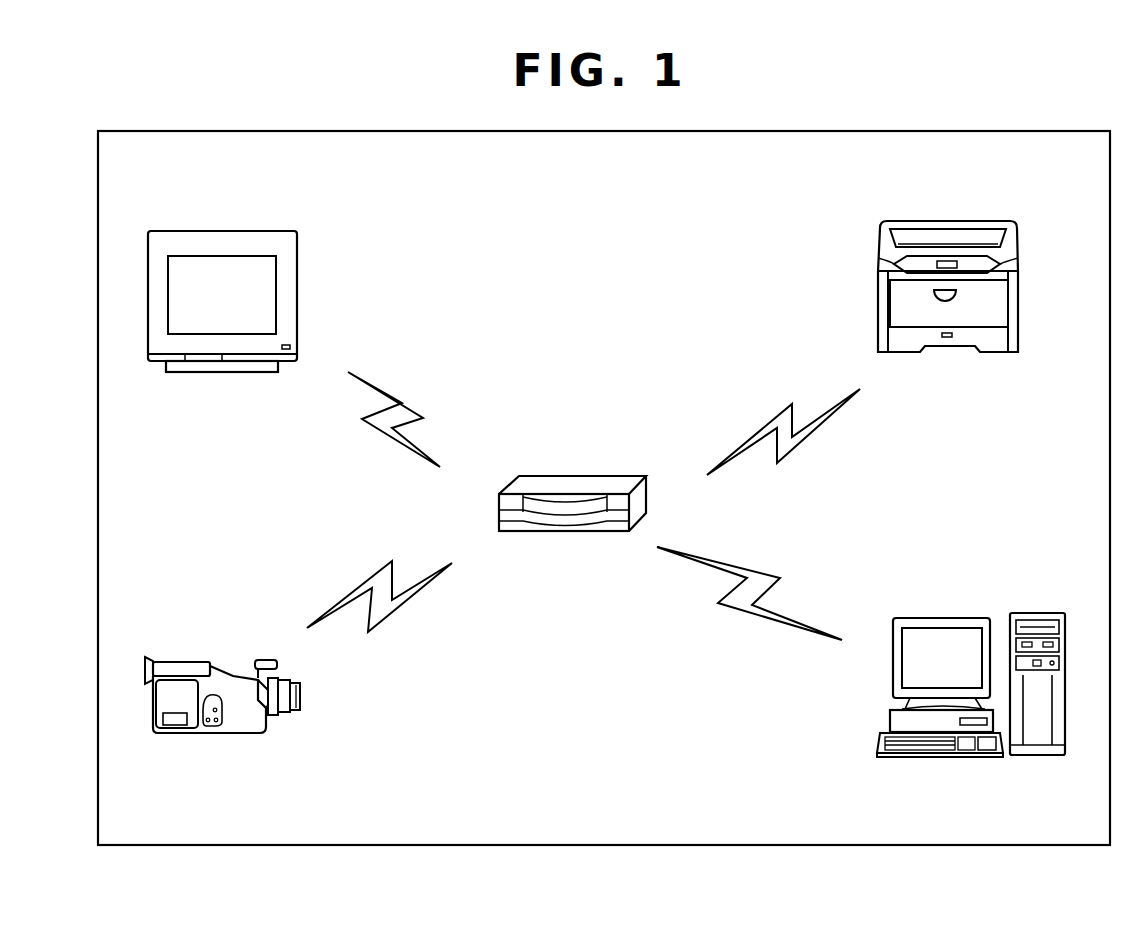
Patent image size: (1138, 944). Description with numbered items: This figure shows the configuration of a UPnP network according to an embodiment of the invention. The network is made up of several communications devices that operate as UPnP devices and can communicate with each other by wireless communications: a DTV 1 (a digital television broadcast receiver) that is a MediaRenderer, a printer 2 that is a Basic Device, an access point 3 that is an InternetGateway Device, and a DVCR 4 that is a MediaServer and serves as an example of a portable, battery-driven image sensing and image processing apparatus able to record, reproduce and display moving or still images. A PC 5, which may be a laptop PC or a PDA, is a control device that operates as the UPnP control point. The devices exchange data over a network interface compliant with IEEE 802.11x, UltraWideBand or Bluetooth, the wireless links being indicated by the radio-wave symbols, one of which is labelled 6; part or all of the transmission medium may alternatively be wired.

The DTV (digital television broadcast receiver) 1 is at (226, 231).
The printer 2 is at (932, 221).
The access point 3 is at (574, 476).
The DVCR (digital video cassette recorder) 4 is at (213, 733).
The PC (personal computer) 5 is at (957, 758).
The wireless communication link 6 is at (402, 403).